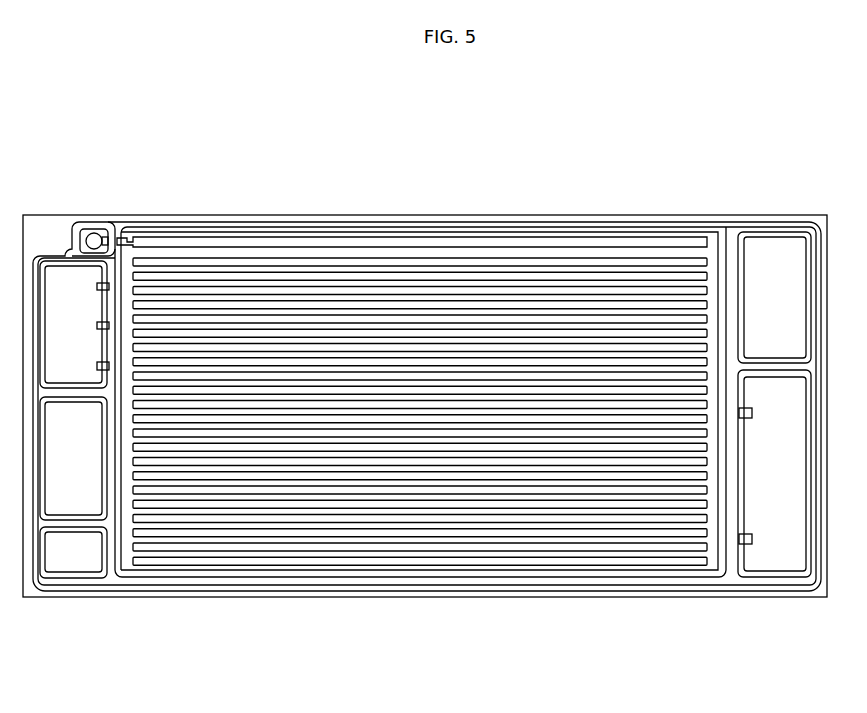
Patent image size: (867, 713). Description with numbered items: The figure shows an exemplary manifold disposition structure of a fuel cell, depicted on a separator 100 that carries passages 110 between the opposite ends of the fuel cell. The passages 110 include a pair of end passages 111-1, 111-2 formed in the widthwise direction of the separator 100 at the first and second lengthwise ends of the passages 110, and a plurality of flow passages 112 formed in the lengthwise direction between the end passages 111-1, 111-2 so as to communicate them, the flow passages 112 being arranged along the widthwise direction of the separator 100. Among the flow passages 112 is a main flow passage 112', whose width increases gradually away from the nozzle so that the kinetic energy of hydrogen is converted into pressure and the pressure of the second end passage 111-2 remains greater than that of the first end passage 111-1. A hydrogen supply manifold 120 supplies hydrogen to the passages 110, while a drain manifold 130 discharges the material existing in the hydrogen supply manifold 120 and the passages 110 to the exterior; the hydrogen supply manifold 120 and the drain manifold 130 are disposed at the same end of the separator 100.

The separator 100 is at (403, 174).
The passages 110 is at (618, 556).
The first end passage 111-1 is at (127, 542).
The second end passage 111-2 is at (713, 537).
The flow passages 112 is at (420, 480).
The main flow passage 112' is at (412, 186).
The hydrogen supply manifold 120 is at (95, 241).
The drain manifold 130 is at (63, 556).